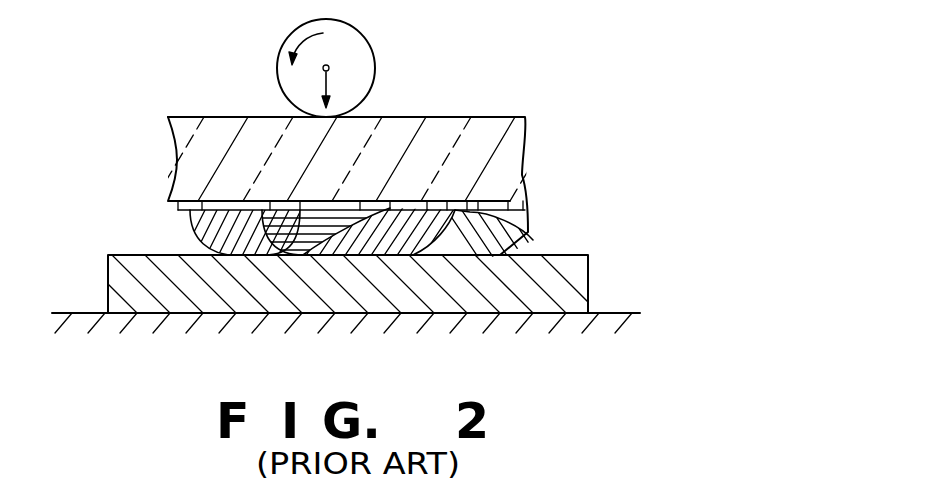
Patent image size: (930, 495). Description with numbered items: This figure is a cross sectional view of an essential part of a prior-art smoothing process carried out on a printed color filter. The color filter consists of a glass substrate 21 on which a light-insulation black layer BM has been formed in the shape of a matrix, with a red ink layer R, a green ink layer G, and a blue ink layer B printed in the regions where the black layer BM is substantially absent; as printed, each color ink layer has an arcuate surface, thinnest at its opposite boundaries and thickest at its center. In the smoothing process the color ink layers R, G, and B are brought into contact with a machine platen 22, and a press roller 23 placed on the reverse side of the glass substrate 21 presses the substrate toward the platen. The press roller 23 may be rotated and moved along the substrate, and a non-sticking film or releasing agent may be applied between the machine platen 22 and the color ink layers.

The glass substrate 21 is at (515, 145).
The machine platen 22 is at (582, 273).
The press roller 23 is at (362, 62).
The red ink layer R is at (248, 246).
The green ink layer G is at (320, 246).
The blue ink layer B is at (400, 246).
The black layer BM is at (496, 246).